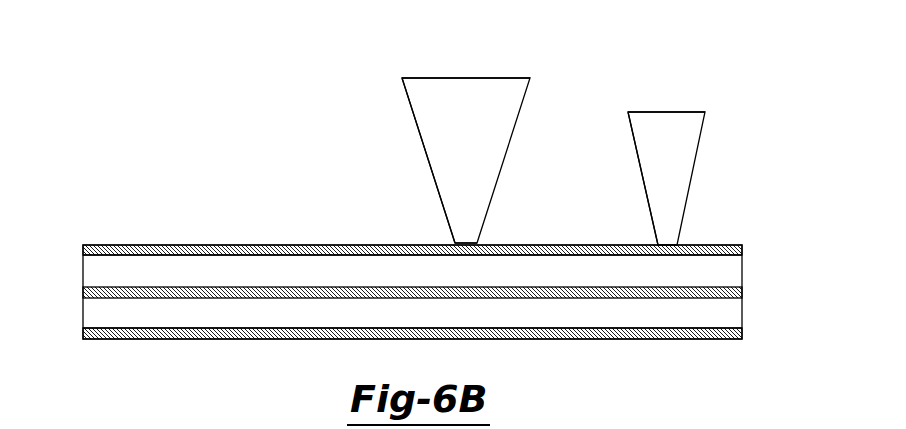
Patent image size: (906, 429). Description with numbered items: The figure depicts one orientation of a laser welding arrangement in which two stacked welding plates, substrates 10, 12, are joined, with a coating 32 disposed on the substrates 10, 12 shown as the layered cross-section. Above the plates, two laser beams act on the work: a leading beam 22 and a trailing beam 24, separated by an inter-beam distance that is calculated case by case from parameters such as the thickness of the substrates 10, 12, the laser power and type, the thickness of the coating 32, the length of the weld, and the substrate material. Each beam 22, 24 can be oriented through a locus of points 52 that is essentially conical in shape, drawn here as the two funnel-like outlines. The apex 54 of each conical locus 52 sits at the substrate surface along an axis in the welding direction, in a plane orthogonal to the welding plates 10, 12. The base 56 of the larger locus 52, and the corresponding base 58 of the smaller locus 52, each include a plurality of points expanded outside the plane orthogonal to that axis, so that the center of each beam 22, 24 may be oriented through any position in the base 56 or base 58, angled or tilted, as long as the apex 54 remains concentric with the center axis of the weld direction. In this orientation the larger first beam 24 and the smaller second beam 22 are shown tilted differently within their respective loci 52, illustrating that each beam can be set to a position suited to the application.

The substrate 10 is at (98, 270).
The substrate 12 is at (98, 306).
The leading beam 22 is at (698, 152).
The trailing beam 24 is at (507, 150).
The coating 32 is at (742, 247).
The locus of points 52 is at (409, 100).
The apex 54 is at (465, 242).
The base 56 is at (459, 78).
The second nozzle inlet 58 is at (668, 112).